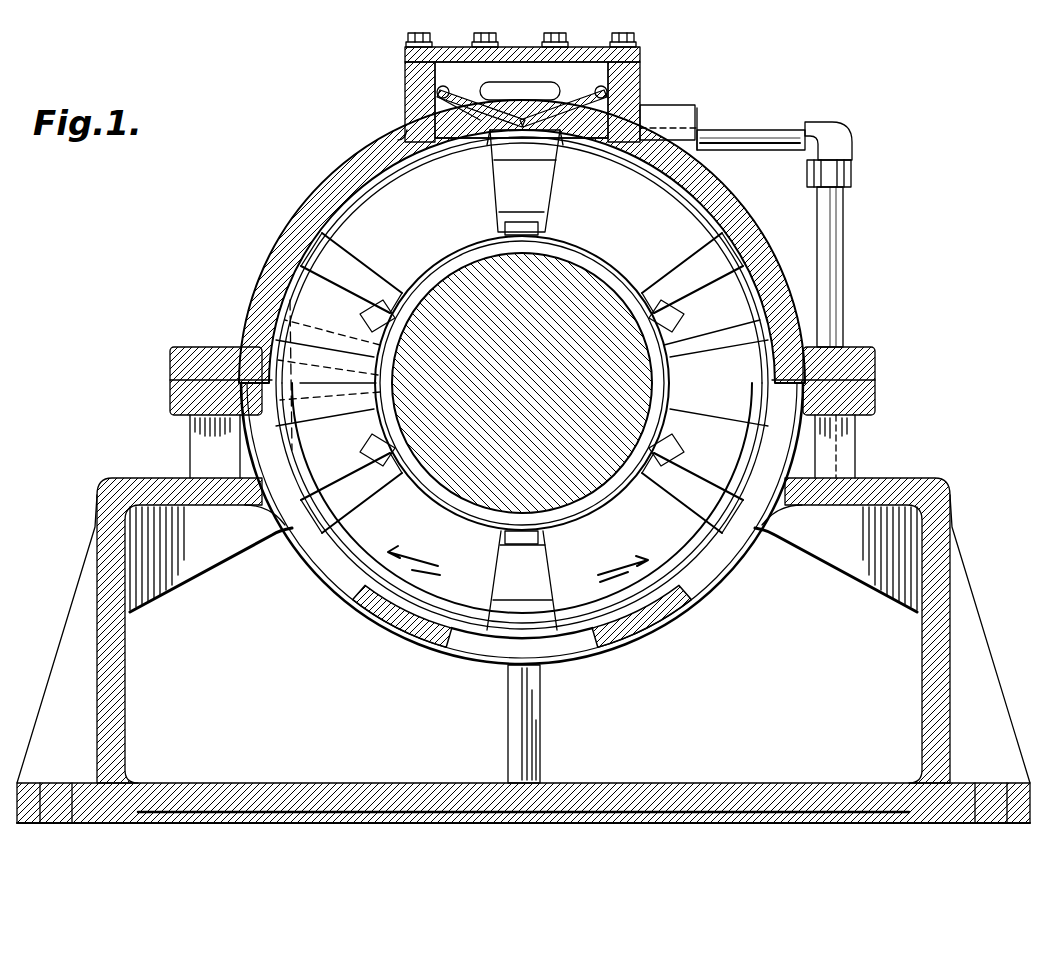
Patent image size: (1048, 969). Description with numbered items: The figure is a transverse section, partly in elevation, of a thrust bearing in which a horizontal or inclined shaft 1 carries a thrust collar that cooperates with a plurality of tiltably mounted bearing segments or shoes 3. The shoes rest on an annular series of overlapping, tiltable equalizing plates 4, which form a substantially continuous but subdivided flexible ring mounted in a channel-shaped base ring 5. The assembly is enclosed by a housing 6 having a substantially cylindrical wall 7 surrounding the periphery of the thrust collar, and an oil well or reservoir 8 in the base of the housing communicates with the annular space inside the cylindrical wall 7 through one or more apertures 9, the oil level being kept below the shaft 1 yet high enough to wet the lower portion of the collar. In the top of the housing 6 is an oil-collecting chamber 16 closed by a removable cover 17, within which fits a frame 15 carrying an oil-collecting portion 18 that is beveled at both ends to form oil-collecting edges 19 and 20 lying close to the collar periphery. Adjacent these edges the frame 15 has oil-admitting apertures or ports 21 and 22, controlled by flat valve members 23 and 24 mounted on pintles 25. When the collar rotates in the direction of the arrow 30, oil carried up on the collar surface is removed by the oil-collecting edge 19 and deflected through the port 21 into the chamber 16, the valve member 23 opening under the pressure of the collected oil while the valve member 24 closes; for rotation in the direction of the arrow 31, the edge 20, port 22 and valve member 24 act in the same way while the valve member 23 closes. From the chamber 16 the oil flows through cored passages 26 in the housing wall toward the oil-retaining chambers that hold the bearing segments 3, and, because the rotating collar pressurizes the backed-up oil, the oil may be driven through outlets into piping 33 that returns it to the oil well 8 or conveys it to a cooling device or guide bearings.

The shaft 1 is at (630, 380).
The bearing segments or shoes 3 is at (522, 279).
The equalizing plates 4 is at (315, 360).
The base ring 5 is at (730, 300).
The housing 6 is at (205, 398).
The cylindrical wall 7 is at (735, 228).
The oil well or reservoir 8 is at (523, 650).
The apertures 9 is at (555, 648).
The frame 15 is at (405, 118).
The oil-collecting chamber 16 is at (440, 78).
The removable cover 17 is at (412, 55).
The oil-collecting portion 18 is at (525, 182).
The oil-collecting edge 19 is at (500, 140).
The oil-collecting edge 20 is at (568, 138).
The oil-admitting aperture or port 21 is at (475, 128).
The oil-admitting aperture or port 22 is at (660, 122).
The valve member 23 is at (430, 132).
The valve member 24 is at (700, 133).
The pintles 25 is at (440, 99).
The cored passages 26 is at (540, 84).
The arrow 30 is at (418, 562).
The arrow 31 is at (615, 572).
The piping 33 is at (790, 122).